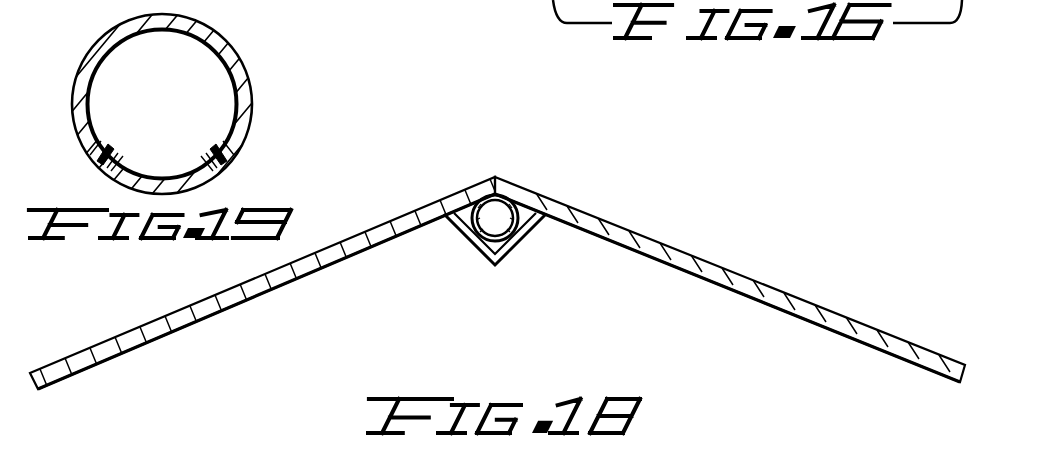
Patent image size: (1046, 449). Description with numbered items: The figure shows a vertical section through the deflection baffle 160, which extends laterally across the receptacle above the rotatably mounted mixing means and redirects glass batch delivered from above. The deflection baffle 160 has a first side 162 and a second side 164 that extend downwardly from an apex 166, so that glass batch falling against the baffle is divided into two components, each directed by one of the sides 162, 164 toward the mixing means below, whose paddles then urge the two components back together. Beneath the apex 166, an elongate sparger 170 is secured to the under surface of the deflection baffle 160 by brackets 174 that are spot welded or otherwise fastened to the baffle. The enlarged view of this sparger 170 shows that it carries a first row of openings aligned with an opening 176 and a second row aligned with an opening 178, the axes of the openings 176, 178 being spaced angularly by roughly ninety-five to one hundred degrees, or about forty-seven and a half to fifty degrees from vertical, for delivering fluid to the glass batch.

In FIG. 18, the deflection baffle 160 is at (497, 283).
In FIG. 18, the first side 162 is at (406, 218).
In FIG. 18, the second side 164 is at (707, 262).
In FIG. 18, the apex 166 is at (495, 177).
In FIG. 19, the sparger 170 is at (248, 71).
In FIG. 18, the sparger 170 is at (506, 233).
In FIG. 18, the brackets 174 is at (479, 251).
In FIG. 19, the opening 176 is at (98, 161).
In FIG. 19, the opening 178 is at (228, 161).